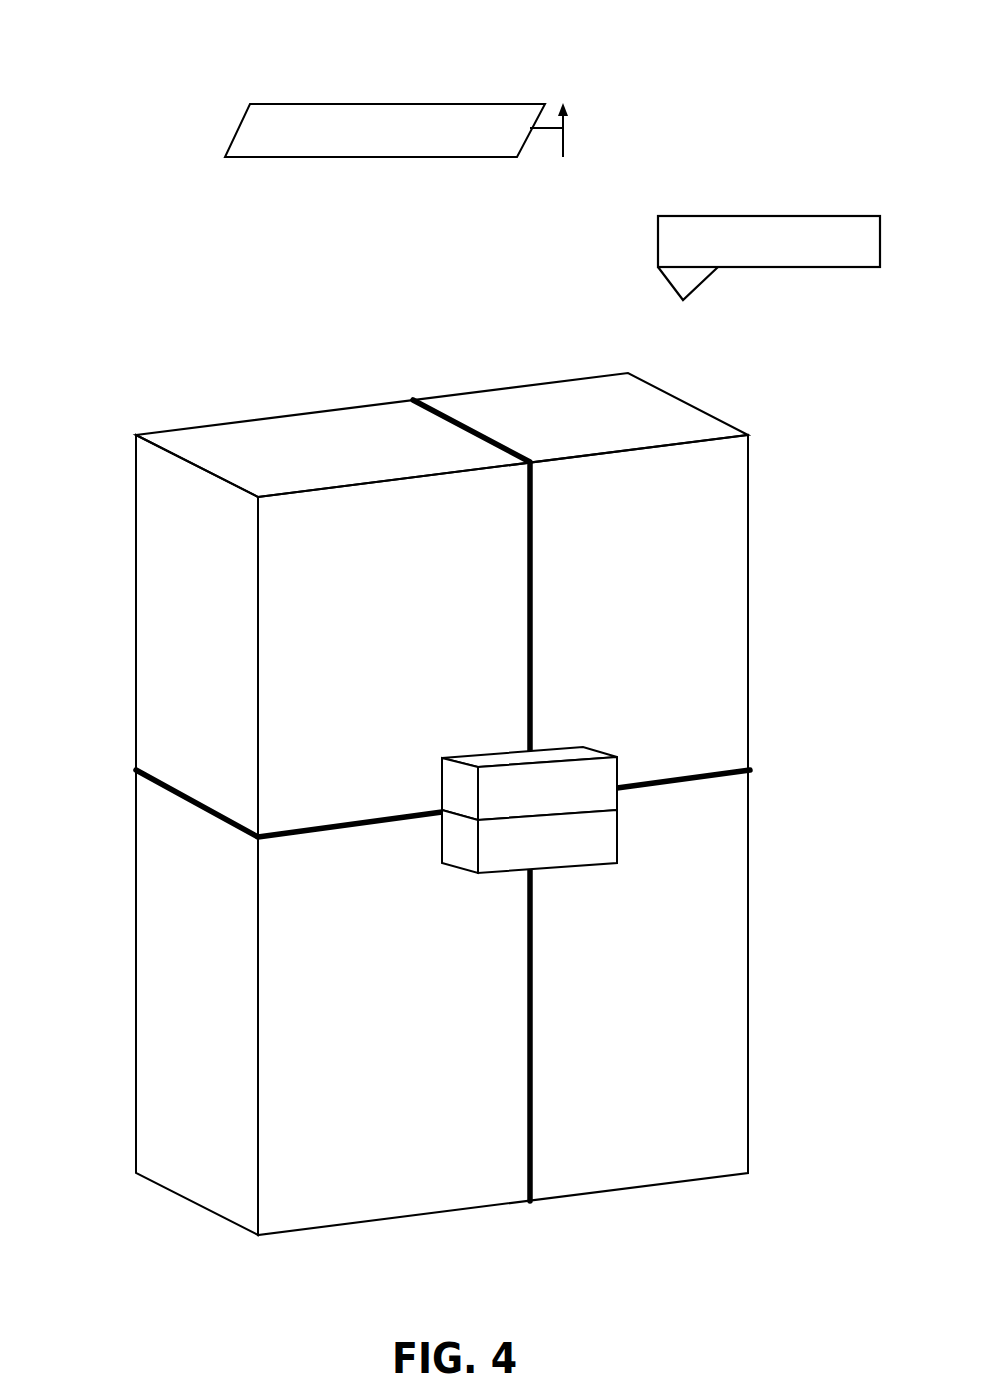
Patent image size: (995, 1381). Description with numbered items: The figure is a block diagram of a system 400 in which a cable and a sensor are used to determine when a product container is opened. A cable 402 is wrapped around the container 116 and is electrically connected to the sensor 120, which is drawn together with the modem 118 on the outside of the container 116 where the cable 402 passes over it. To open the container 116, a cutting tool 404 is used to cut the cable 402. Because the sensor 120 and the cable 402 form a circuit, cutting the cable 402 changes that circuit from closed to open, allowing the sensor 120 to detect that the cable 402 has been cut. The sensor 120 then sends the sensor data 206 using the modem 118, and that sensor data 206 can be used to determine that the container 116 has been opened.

The system 400 is at (89, 27).
The sensor data 206 is at (475, 142).
The cutting tool 404 is at (862, 252).
The container 116 is at (628, 373).
The cable 402 is at (413, 400).
The modem 118 is at (605, 798).
The sensor 120 is at (608, 852).